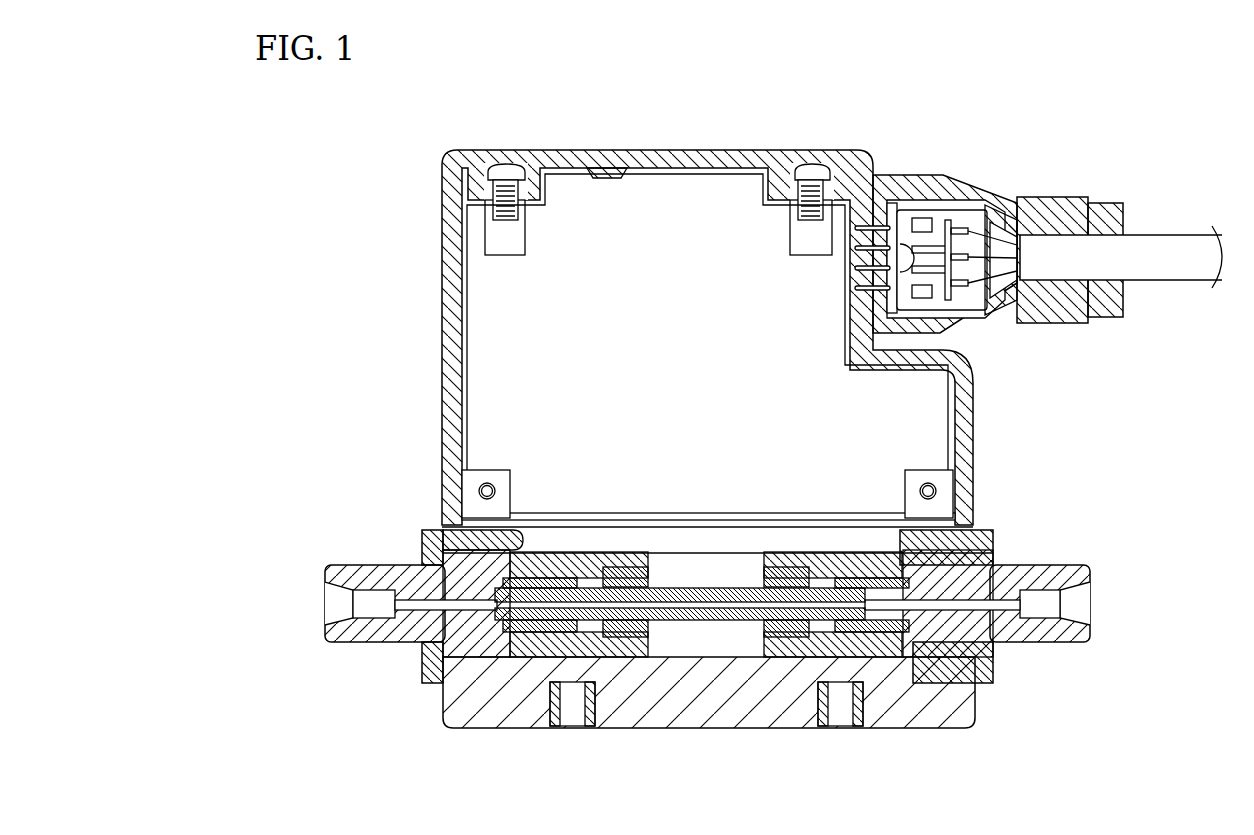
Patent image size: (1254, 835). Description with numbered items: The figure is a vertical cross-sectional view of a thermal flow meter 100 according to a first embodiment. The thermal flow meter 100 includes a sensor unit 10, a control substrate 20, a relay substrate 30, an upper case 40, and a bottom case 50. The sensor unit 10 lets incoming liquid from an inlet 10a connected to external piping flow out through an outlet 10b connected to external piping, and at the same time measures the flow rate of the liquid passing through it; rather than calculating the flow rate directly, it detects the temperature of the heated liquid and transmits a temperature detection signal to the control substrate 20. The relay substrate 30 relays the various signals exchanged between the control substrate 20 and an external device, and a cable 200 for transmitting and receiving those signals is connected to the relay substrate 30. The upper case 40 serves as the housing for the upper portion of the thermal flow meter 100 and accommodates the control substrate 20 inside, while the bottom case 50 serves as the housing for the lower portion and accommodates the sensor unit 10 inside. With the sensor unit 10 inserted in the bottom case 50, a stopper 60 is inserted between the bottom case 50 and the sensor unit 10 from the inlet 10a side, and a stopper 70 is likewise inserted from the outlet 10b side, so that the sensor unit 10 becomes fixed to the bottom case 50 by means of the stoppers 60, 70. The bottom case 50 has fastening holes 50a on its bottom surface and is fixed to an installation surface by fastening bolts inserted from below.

The thermal flow meter 100 is at (864, 95).
The sensor unit 10 is at (1092, 547).
The inlet 10a is at (330, 603).
The outlet 10b is at (1088, 606).
The control substrate 20 is at (962, 431).
The relay substrate 30 is at (967, 180).
The upper case 40 is at (642, 150).
The bottom case 50 is at (684, 730).
The fastening holes 50a is at (578, 730).
The stopper 60 is at (420, 664).
The stopper 70 is at (990, 662).
The cable 200 is at (1102, 160).